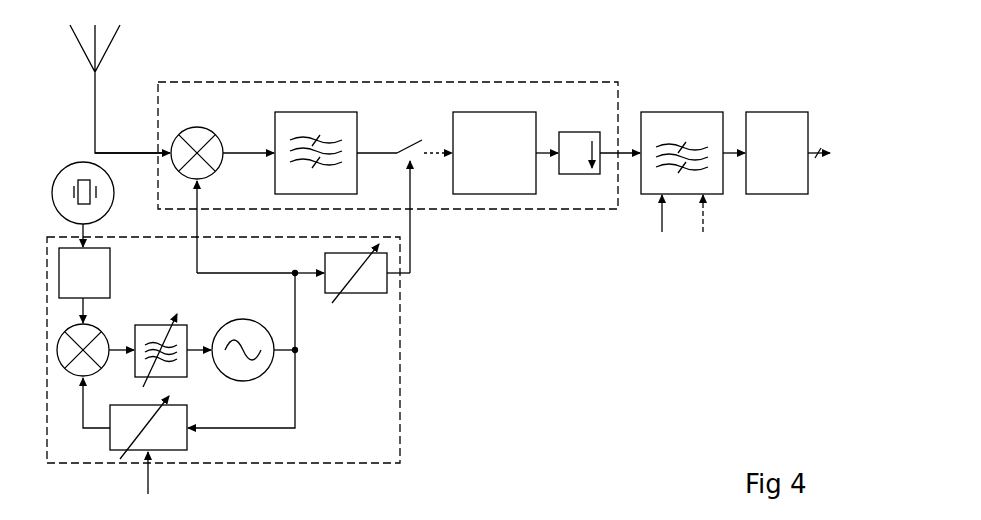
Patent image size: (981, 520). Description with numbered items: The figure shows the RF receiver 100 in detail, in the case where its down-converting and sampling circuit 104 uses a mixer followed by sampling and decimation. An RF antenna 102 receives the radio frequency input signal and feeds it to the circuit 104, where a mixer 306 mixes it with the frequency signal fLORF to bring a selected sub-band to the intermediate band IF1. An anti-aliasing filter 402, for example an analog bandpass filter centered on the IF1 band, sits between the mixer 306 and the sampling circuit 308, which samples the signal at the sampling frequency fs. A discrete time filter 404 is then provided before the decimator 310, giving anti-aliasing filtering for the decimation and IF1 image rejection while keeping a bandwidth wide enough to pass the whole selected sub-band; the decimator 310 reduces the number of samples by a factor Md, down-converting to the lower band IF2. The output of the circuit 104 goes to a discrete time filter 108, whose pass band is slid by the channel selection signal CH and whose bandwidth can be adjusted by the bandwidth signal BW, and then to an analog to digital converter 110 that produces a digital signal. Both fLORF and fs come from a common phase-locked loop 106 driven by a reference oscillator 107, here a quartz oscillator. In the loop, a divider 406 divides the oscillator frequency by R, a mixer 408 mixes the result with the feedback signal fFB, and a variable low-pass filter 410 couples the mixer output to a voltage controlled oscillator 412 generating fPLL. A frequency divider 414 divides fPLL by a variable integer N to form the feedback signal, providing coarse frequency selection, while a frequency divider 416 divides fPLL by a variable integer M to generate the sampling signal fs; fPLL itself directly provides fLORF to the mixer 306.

The RF receiver 100 is at (744, 53).
The RF antenna 102 is at (113, 44).
The down-converting and sampling circuit 104 is at (418, 80).
The phase-locked loop circuit 106 is at (132, 243).
The reference oscillator 107 is at (75, 170).
The discrete time filter 108 is at (660, 112).
The analog to digital converter 110 is at (773, 112).
The mixer 306 is at (201, 132).
The sampling circuit 308 is at (422, 140).
The decimator 310 is at (578, 133).
The anti-aliasing filter 402 is at (347, 118).
The discrete time filter 404 is at (490, 118).
The divider 406 is at (104, 275).
The mixer 408 is at (93, 329).
The variable low-pass filter 410 is at (183, 332).
The voltage controlled oscillator 412 is at (242, 378).
The frequency divider 414 is at (178, 440).
The frequency divider 416 is at (367, 293).